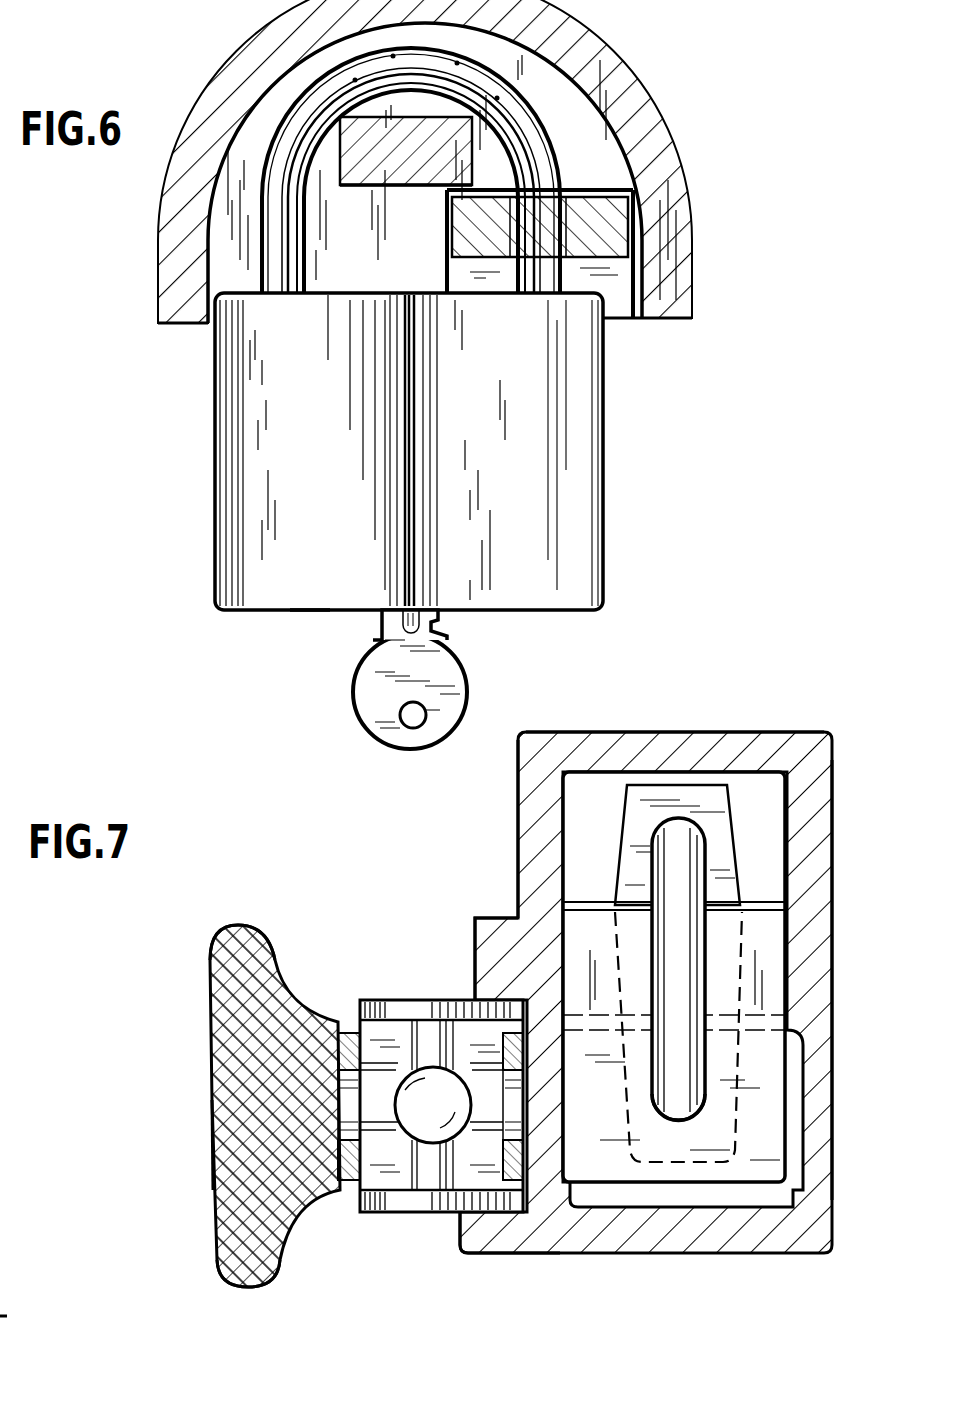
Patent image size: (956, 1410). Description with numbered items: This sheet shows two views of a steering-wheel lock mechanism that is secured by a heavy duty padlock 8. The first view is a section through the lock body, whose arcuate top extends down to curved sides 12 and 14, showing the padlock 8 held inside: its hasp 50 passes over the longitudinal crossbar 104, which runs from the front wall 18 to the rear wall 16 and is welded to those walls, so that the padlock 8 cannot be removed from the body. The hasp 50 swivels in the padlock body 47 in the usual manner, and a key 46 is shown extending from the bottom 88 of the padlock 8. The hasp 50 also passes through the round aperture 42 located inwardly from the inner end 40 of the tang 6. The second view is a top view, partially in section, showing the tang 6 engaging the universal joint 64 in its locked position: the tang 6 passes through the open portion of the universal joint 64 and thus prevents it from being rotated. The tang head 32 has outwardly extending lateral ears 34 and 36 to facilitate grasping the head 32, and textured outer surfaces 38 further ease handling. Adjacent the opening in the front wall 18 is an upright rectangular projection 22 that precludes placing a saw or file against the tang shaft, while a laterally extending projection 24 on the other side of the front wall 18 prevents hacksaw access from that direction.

In FIG. 6, the tang 6 is at (448, 221).
In FIG. 7, the tang 6 is at (430, 1090).
In FIG. 6, the padlock 8 is at (604, 470).
In FIG. 7, the padlock 8 is at (734, 825).
In FIG. 6, the curved side 12 is at (697, 269).
In FIG. 7, the curved side 12 is at (675, 1255).
In FIG. 6, the curved side 14 is at (162, 270).
In FIG. 7, the curved side 14 is at (688, 732).
In FIG. 7, the rear wall 16 is at (832, 900).
In FIG. 7, the front wall 18 is at (518, 885).
In FIG. 7, the upright rectangular projection 22 is at (474, 948).
In FIG. 7, the lateral projection 24 is at (474, 1256).
In FIG. 7, the tang head 32 is at (210, 1088).
In FIG. 7, the lateral ear 34 is at (240, 925).
In FIG. 7, the lateral ear 36 is at (224, 1286).
In FIG. 7, the textured outer surfaces 38 is at (215, 1147).
In FIG. 7, the inner end 40 is at (782, 1112).
In FIG. 6, the round aperture 42 is at (535, 297).
In FIG. 7, the round aperture 42 is at (700, 1120).
In FIG. 6, the key 46 is at (365, 689).
In FIG. 6, the padlock body 47 is at (256, 548).
In FIG. 6, the hasp 50 is at (306, 266).
In FIG. 7, the hasp 50 is at (650, 866).
In FIG. 7, the universal joint 64 is at (404, 1214).
In FIG. 6, the bottom 88 is at (290, 612).
In FIG. 6, the longitudinal crossbar 104 is at (376, 184).
In FIG. 7, the longitudinal crossbar 104 is at (790, 985).